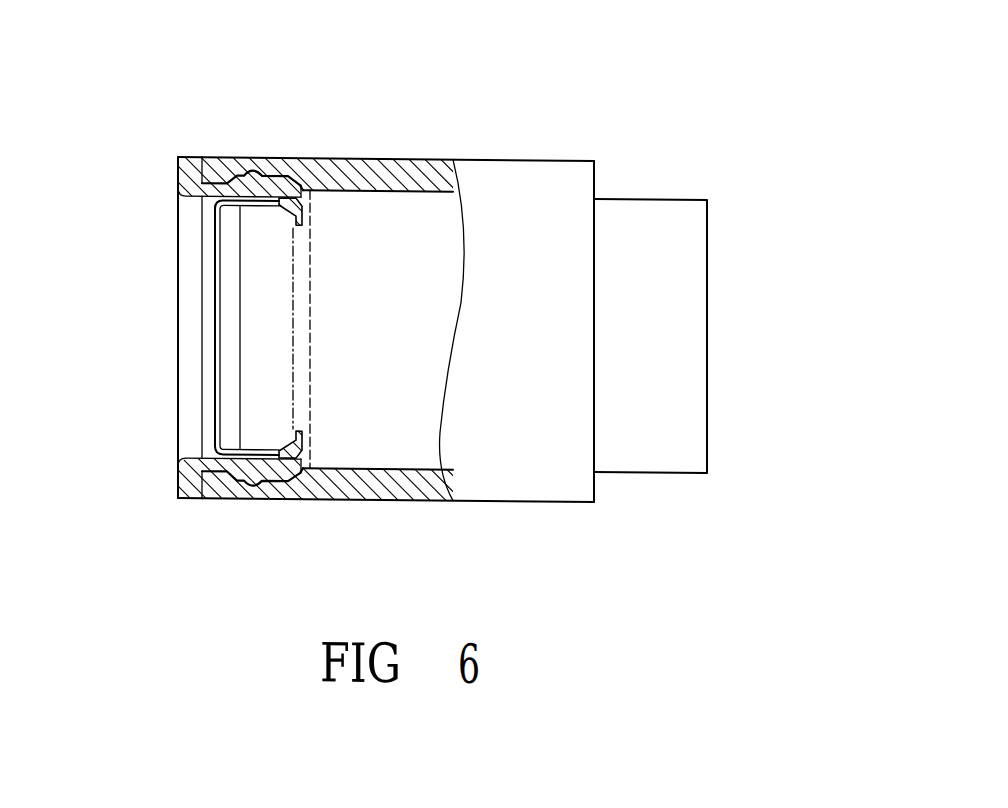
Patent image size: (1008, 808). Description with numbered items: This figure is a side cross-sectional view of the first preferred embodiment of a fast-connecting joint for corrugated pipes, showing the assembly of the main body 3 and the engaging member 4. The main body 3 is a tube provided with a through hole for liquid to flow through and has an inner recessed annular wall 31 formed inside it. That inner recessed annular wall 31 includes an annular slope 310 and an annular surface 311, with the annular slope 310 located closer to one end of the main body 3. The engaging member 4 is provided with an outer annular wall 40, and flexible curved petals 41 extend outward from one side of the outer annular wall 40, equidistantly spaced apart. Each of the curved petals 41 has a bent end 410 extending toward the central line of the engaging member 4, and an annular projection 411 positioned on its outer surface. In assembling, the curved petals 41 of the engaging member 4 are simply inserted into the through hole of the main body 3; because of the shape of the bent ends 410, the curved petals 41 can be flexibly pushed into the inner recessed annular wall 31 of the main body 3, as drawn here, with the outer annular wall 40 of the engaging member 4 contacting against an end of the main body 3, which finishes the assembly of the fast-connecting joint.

The main body 3 is at (418, 330).
The inner recessed annular wall 31 is at (269, 148).
The annular slope 310 is at (226, 182).
The annular surface 311 is at (301, 186).
The engaging member 4 is at (418, 305).
The outer annular wall 40 is at (181, 499).
The flexible curved petal 41 is at (253, 455).
The bent end 410 is at (303, 227).
The annular projection 411 is at (244, 172).